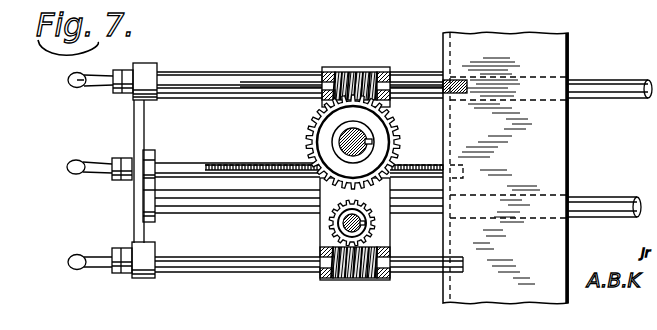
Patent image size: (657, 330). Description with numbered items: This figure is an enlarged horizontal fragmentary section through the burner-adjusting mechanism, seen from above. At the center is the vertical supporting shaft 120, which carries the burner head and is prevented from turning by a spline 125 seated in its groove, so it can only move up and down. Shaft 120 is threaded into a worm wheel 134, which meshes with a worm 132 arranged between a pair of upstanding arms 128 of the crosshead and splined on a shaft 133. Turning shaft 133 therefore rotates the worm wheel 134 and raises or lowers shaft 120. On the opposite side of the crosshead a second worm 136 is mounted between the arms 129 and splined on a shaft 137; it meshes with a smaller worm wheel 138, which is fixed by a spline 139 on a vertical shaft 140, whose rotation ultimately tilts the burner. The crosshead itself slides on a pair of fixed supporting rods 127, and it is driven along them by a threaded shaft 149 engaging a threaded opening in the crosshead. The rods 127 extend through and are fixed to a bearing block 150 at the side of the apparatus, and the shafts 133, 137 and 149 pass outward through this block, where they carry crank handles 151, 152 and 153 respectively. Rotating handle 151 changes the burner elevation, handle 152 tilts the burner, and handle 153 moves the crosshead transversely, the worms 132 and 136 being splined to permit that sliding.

The supporting shaft 120 is at (344, 140).
The spline 125 is at (382, 142).
The supporting rods 127 is at (605, 80).
The upstanding integral arms 128 is at (326, 73).
The arms 129 is at (322, 249).
The worm 132 is at (343, 71).
The shaft 133 is at (193, 83).
The worm wheel 134 is at (401, 131).
The second worm 136 is at (350, 280).
The shaft 137 is at (184, 268).
The worm wheel 138 is at (372, 226).
The spline 139 is at (378, 232).
The vertical shaft 140 is at (335, 218).
The shaft 149 is at (193, 163).
The bearing block 150 is at (133, 124).
The crank handle 151 is at (70, 87).
The crank handle 152 is at (76, 270).
The crank handle 153 is at (67, 167).